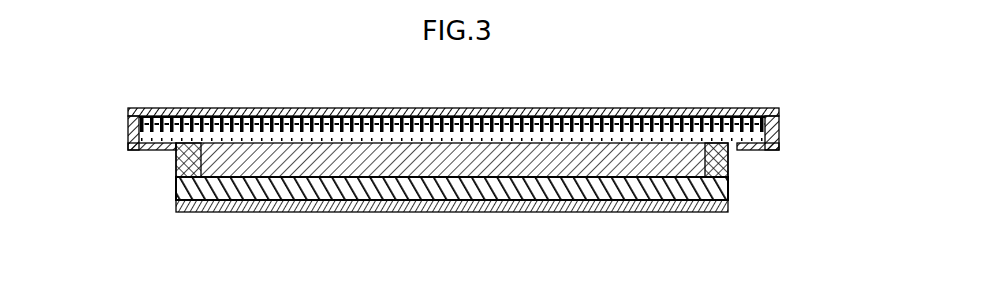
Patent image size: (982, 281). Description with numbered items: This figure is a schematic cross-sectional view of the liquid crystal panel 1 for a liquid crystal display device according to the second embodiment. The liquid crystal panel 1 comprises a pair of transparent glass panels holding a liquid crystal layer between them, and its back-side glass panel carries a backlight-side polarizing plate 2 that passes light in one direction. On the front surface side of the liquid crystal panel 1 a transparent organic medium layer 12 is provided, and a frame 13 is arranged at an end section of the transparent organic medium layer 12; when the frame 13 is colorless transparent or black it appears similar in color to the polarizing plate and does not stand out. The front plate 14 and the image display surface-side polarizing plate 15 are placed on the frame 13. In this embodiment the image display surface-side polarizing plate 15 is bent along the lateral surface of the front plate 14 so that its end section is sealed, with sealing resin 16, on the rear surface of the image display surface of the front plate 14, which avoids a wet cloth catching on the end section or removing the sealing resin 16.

The liquid crystal panel 1 is at (177, 190).
The backlight-side polarizing plate 2 is at (177, 205).
The transparent organic medium layer 12 is at (257, 160).
The frame 13 is at (181, 148).
The front plate 14 is at (388, 130).
The image display surface-side polarizing plate 15 is at (523, 110).
The sealing resin 16 is at (763, 152).